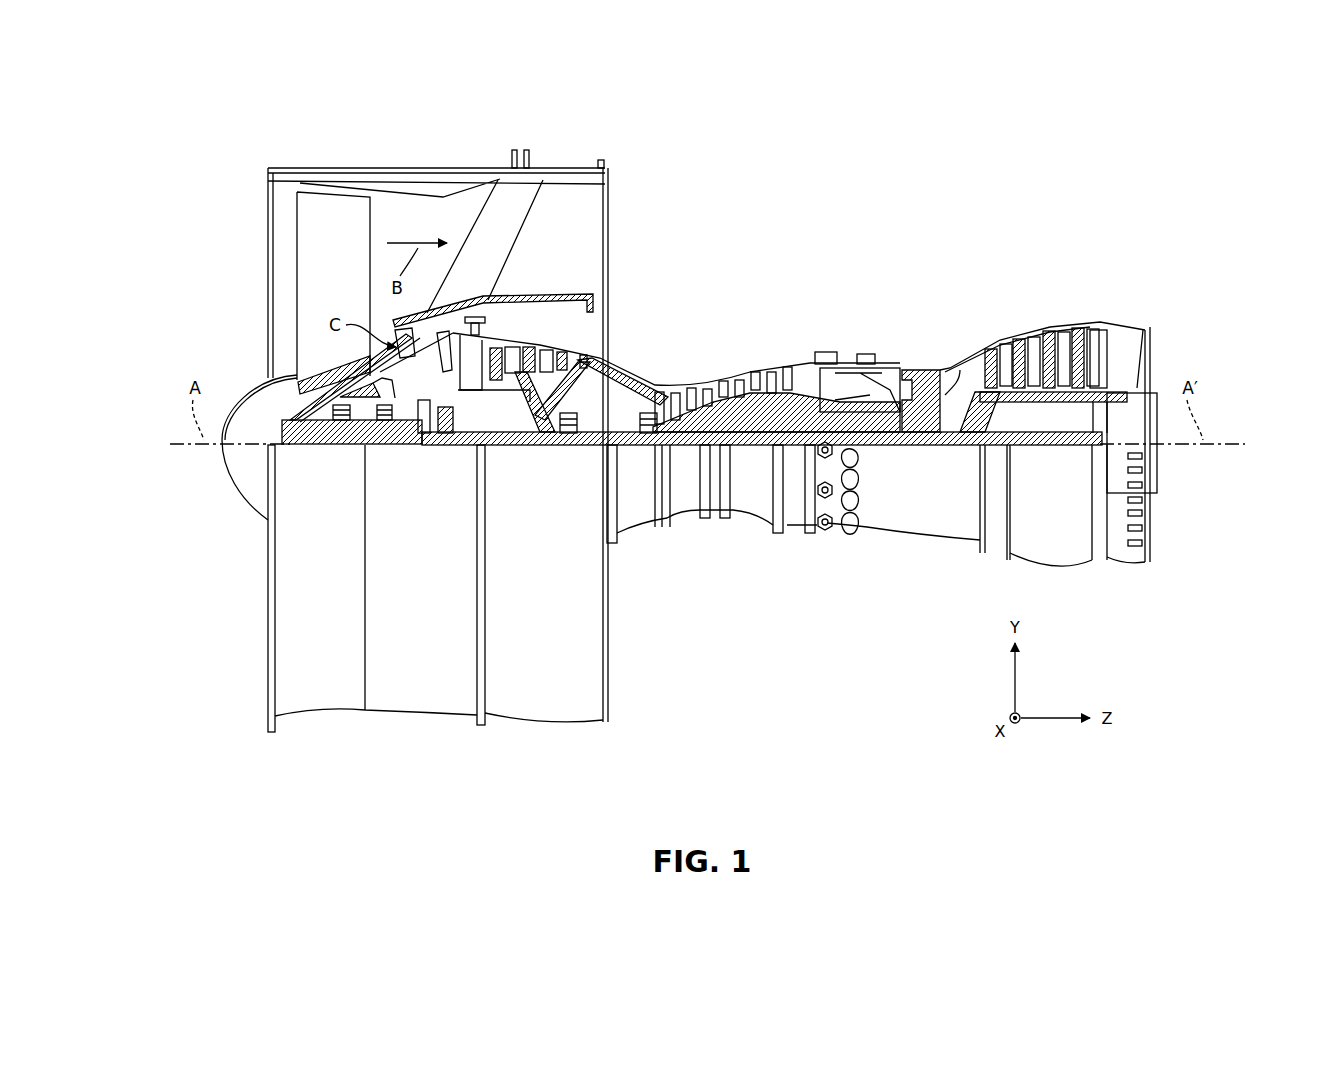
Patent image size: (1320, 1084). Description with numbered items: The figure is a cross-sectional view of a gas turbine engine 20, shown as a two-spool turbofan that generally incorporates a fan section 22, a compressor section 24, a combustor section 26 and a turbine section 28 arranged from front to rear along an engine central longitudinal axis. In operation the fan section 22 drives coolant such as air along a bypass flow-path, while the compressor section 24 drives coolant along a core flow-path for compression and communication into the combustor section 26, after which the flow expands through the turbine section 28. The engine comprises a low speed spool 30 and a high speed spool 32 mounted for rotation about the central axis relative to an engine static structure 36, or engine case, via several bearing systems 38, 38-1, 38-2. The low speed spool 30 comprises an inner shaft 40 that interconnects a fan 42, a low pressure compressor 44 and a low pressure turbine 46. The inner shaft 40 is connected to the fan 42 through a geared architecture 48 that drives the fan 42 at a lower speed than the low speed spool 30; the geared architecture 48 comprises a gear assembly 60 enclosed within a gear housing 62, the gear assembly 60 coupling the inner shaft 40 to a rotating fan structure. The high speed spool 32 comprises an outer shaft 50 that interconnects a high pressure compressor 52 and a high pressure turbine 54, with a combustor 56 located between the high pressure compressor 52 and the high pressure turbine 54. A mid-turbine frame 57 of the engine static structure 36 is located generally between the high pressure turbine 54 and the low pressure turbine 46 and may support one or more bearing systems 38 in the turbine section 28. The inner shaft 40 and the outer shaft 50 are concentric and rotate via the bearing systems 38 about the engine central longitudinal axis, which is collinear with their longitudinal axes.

The gas turbine engine 20 is at (899, 182).
The fan section 22 is at (460, 154).
The compressor section 24 is at (483, 268).
The combustor section 26 is at (812, 268).
The turbine section 28 is at (1097, 268).
The low speed spool 30 is at (757, 452).
The high speed spool 32 is at (803, 364).
The engine static structure 36 is at (793, 510).
The bearing system 38 is at (990, 300).
The bearing system 38-1 is at (345, 447).
The bearing system 38-2 is at (570, 447).
The inner shaft 40 is at (628, 450).
The fan 42 is at (333, 293).
The low pressure compressor 44 is at (548, 350).
The low pressure turbine 46 is at (1048, 327).
The geared architecture 48 is at (440, 458).
The outer shaft 50 is at (867, 443).
The high pressure compressor 52 is at (752, 382).
The high pressure turbine 54 is at (921, 367).
The combustor 56 is at (864, 367).
The mid-turbine frame 57 is at (973, 354).
The gear assembly 60 is at (455, 416).
The gear housing 62 is at (455, 393).